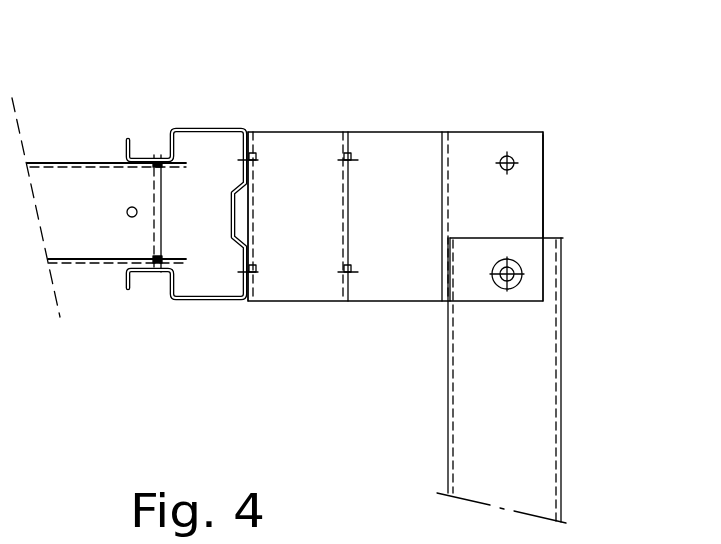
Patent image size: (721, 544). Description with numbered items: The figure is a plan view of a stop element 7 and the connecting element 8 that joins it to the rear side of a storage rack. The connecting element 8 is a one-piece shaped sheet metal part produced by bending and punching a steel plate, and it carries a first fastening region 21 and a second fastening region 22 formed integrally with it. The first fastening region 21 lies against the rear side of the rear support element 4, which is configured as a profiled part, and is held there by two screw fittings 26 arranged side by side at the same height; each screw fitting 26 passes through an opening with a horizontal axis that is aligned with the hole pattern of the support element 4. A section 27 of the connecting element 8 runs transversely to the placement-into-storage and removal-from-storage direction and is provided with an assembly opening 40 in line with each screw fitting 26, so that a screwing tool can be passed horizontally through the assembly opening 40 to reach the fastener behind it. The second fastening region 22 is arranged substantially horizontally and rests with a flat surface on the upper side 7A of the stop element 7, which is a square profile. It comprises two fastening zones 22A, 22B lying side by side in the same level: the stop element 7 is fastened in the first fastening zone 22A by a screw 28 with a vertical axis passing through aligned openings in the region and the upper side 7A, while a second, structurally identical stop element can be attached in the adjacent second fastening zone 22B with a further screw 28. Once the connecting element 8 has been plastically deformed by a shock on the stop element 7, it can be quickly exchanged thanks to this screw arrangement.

The support element 4 is at (197, 129).
The stop element 7 is at (562, 408).
The upper side of the stop element 7A is at (533, 156).
The connecting element 8 is at (410, 132).
The first fastening region 21 is at (249, 247).
The second fastening region 22 is at (488, 203).
The first fastening zone 22A is at (527, 290).
The second fastening zone 22B is at (510, 146).
The screw fitting 26 is at (251, 153).
The section 27 is at (352, 243).
The screw 28 is at (512, 275).
The assembly opening 40 is at (350, 153).